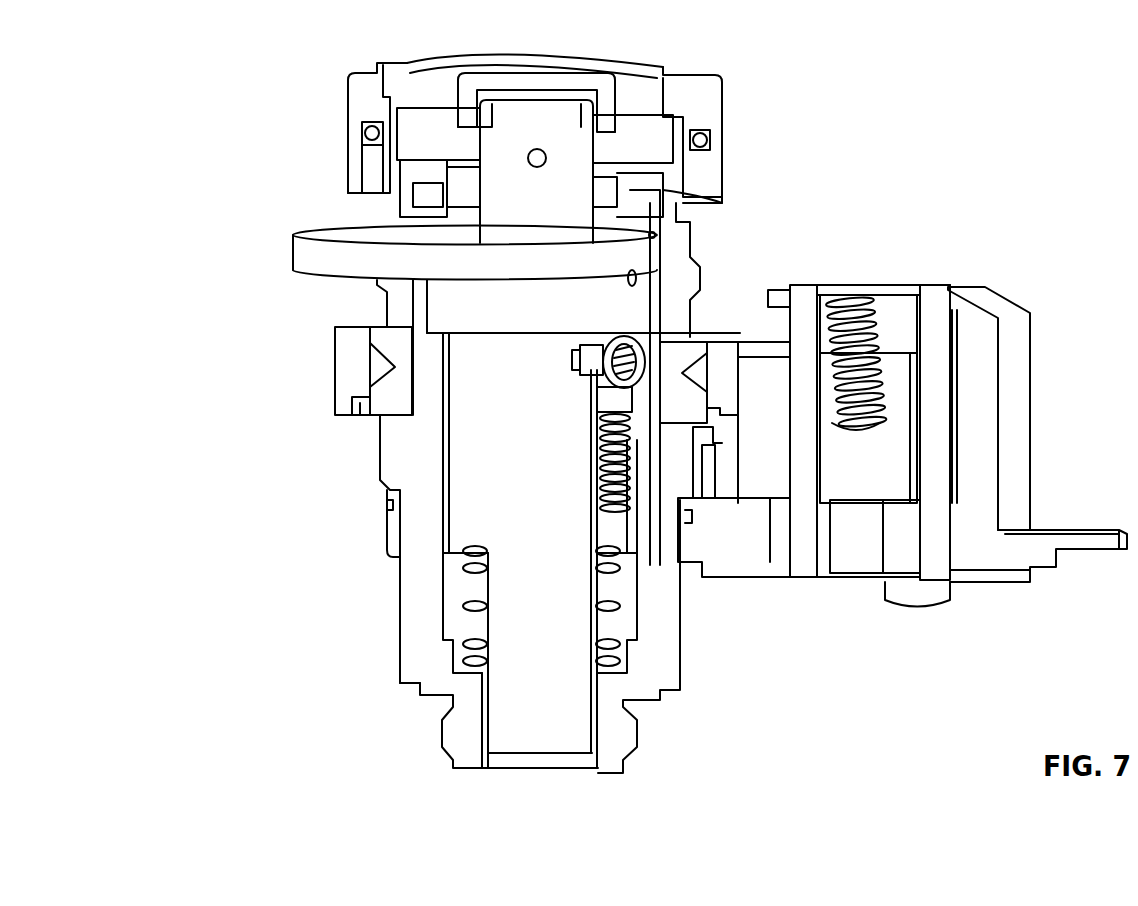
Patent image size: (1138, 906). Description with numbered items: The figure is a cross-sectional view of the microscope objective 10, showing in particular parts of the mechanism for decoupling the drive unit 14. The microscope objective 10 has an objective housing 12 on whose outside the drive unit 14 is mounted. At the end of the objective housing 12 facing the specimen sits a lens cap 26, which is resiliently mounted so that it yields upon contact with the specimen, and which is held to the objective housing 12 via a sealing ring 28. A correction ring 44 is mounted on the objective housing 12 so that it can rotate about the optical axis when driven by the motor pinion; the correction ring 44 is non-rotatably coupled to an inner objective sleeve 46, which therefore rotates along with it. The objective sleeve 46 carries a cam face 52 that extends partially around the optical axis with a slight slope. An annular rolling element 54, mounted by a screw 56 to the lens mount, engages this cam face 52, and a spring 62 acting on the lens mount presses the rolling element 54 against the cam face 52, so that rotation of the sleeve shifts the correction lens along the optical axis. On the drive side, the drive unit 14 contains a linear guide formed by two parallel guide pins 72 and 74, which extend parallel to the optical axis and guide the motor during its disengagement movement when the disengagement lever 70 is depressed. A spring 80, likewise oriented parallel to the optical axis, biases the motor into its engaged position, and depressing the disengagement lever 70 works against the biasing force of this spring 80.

The microscope objective 10 is at (258, 618).
The objective housing 12 is at (667, 678).
The drive unit 14 is at (1017, 207).
The lens cap 26 is at (363, 90).
The sealing ring 28 is at (710, 145).
The correction ring 44 is at (695, 258).
The objective sleeve 46 is at (300, 253).
The cam face 52 is at (527, 330).
The rolling element 54 is at (613, 337).
The screw 56 is at (577, 347).
The spring 62 is at (617, 477).
The disengagement lever 70 is at (1093, 541).
The guide pin 72 is at (805, 560).
The guide pin 74 is at (940, 548).
The spring 80 is at (883, 337).